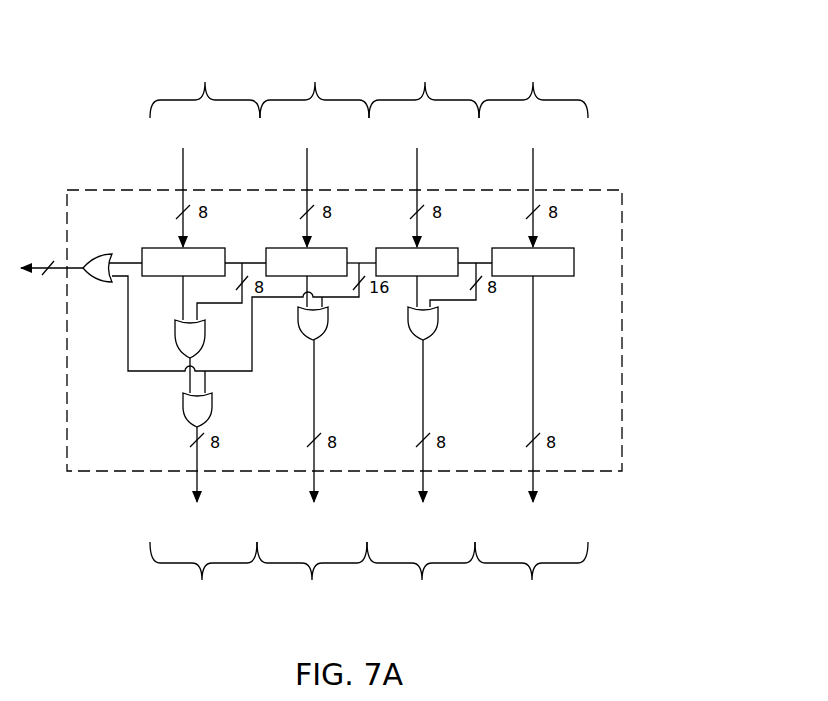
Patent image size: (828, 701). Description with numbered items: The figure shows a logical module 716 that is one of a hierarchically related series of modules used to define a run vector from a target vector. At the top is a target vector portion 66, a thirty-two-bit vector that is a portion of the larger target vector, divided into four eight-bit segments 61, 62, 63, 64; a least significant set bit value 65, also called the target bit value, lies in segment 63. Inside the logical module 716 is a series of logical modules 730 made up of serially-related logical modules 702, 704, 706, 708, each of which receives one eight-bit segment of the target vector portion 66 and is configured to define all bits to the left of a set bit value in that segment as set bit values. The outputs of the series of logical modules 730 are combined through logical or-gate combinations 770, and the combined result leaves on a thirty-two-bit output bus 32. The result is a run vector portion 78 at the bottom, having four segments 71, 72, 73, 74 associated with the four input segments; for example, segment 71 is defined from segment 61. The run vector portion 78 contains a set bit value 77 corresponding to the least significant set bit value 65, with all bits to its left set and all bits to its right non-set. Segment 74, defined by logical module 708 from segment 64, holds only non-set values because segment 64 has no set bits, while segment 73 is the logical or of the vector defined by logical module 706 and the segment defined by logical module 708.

The segment 61 is at (205, 80).
The segment 62 is at (314, 80).
The segment 63 is at (424, 80).
The segment 64 is at (533, 80).
The least significant set bit value 65 is at (451, 114).
The target vector portion 66 is at (606, 131).
The logical module 716 is at (144, 216).
The logical module 702 is at (202, 273).
The logical module 704 is at (325, 273).
The logical module 706 is at (435, 273).
The logical module 708 is at (551, 273).
The series of logical modules 730 is at (422, 261).
The logical or-gate combinations 770 is at (96, 283).
The 32-bit output bus 32 is at (52, 281).
The segment 71 is at (203, 579).
The segment 72 is at (312, 579).
The segment 73 is at (421, 579).
The segment 74 is at (531, 579).
The set bit value 77 is at (453, 548).
The run vector portion 78 is at (605, 535).